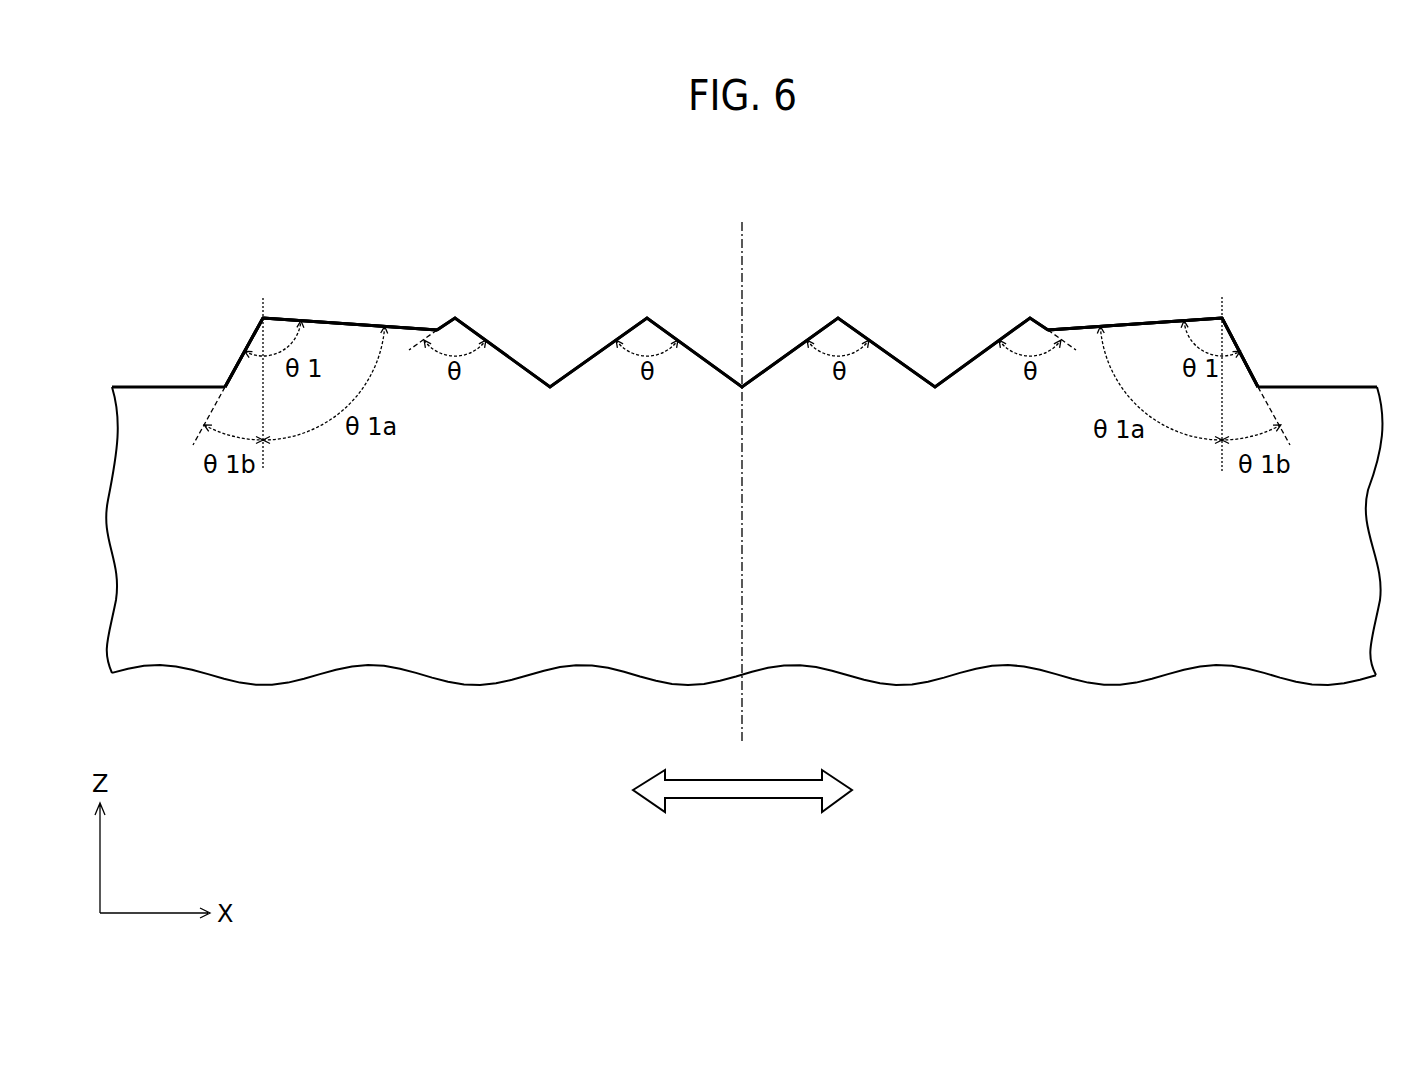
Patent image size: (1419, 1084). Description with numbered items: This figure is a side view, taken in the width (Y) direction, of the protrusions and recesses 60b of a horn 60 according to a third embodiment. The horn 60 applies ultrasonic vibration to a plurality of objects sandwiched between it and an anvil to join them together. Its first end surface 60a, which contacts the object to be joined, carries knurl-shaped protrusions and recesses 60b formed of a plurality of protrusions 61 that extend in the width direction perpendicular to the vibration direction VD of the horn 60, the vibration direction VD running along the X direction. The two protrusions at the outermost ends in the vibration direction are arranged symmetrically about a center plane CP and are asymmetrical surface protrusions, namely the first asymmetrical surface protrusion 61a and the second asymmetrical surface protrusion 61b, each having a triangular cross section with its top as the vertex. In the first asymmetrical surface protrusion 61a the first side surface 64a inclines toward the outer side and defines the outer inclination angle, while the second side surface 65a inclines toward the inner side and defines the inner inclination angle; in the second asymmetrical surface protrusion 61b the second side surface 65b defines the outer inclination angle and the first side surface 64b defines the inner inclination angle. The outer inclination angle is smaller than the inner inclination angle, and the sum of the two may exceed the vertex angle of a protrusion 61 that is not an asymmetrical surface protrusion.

The horn 60 is at (1168, 630).
The first end surface 60a is at (1328, 386).
The protrusions and recesses 60b is at (632, 283).
The protrusion 61 is at (504, 368).
The first asymmetrical surface protrusion 61a is at (277, 332).
The second asymmetrical surface protrusion 61b is at (1208, 328).
The first side surface 64a is at (242, 357).
The first side surface 64b is at (1118, 318).
The second side surface 65a is at (363, 317).
The second side surface 65b is at (1245, 357).
The center plane CP is at (742, 258).
The vibration direction VD is at (742, 798).